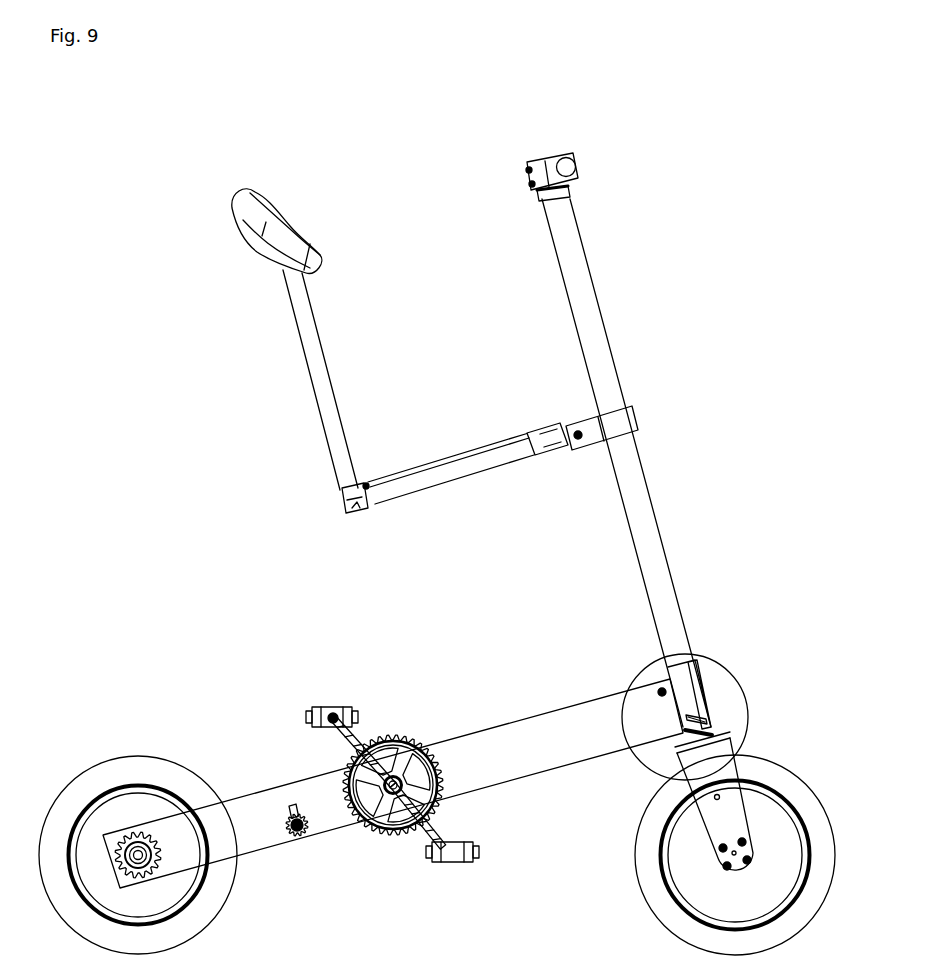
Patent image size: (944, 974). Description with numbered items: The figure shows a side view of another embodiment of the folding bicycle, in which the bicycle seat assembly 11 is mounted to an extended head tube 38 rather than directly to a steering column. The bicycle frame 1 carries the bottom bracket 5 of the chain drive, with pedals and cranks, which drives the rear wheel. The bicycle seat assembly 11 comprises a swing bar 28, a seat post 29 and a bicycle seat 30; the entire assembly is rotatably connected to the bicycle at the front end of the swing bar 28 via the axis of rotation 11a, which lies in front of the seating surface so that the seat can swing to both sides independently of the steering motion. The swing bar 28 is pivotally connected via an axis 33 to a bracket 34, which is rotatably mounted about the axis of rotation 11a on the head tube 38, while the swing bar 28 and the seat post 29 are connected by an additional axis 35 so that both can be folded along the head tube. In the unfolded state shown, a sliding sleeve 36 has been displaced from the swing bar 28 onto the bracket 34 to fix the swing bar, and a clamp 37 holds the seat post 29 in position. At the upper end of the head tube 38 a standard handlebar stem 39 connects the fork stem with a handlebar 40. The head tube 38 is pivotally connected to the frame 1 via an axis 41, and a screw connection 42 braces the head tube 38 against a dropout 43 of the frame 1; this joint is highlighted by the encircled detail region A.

The bicycle frame 1 is at (515, 748).
The bottom bracket 5 is at (370, 835).
The bicycle seat assembly 11 is at (555, 380).
The axis of rotation 11a is at (618, 425).
The swing bar 28 is at (446, 472).
The seat post 29 is at (312, 347).
The bicycle seat 30 is at (260, 225).
The axis 33 is at (578, 442).
The bracket 34 is at (596, 440).
The additional axis 35 is at (352, 488).
The sliding sleeve 36 is at (545, 445).
The clamp 37 is at (350, 512).
The head tube 38 is at (580, 290).
The handlebar stem 39 is at (548, 165).
The handlebar 40 is at (575, 167).
The axis 41 is at (660, 692).
The screw connection 42 is at (700, 720).
The dropout 43 is at (690, 703).
The detail region A is at (737, 685).